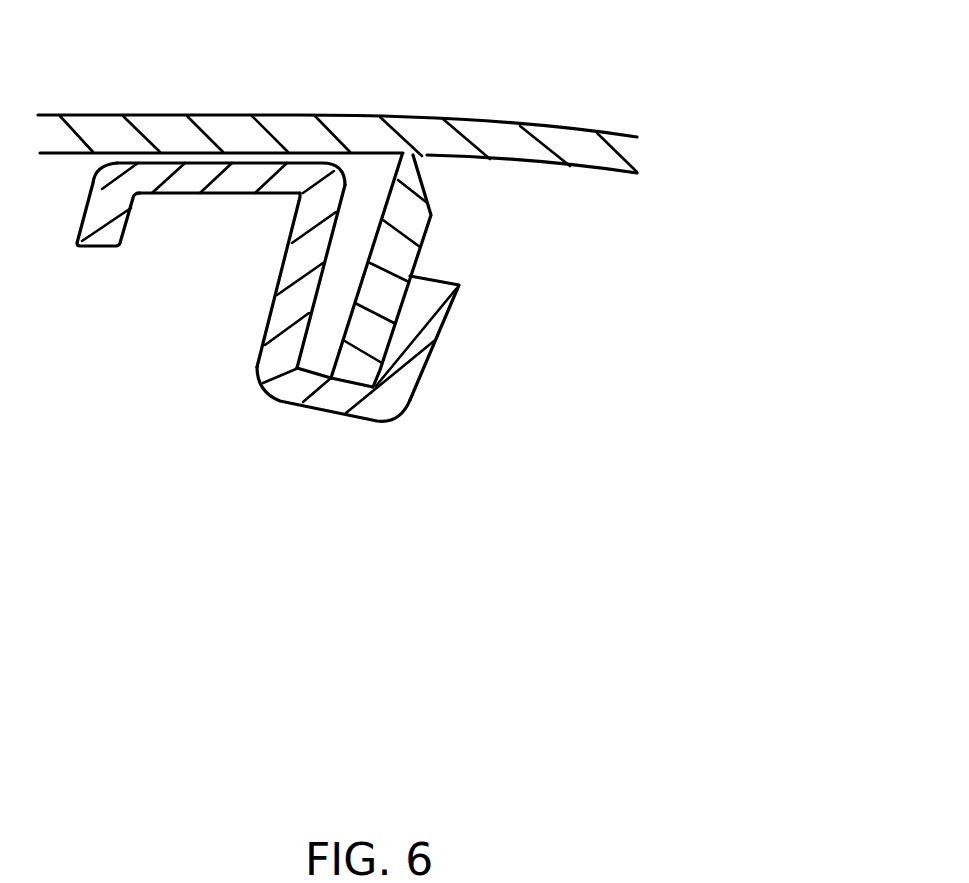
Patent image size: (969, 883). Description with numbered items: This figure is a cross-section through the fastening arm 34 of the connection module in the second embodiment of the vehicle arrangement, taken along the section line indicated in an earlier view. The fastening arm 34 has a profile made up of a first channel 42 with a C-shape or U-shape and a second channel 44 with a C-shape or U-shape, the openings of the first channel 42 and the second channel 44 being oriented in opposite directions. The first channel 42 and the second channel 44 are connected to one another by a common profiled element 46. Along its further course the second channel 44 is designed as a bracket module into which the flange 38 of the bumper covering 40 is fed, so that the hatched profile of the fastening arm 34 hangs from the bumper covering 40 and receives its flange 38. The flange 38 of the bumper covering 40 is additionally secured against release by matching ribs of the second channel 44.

The bumper covering 40 is at (562, 95).
The fastening arm 34 is at (293, 326).
The first channel 42 is at (198, 212).
The common profiled element 46 is at (285, 308).
The second channel 44 is at (355, 281).
The flange 38 is at (412, 232).